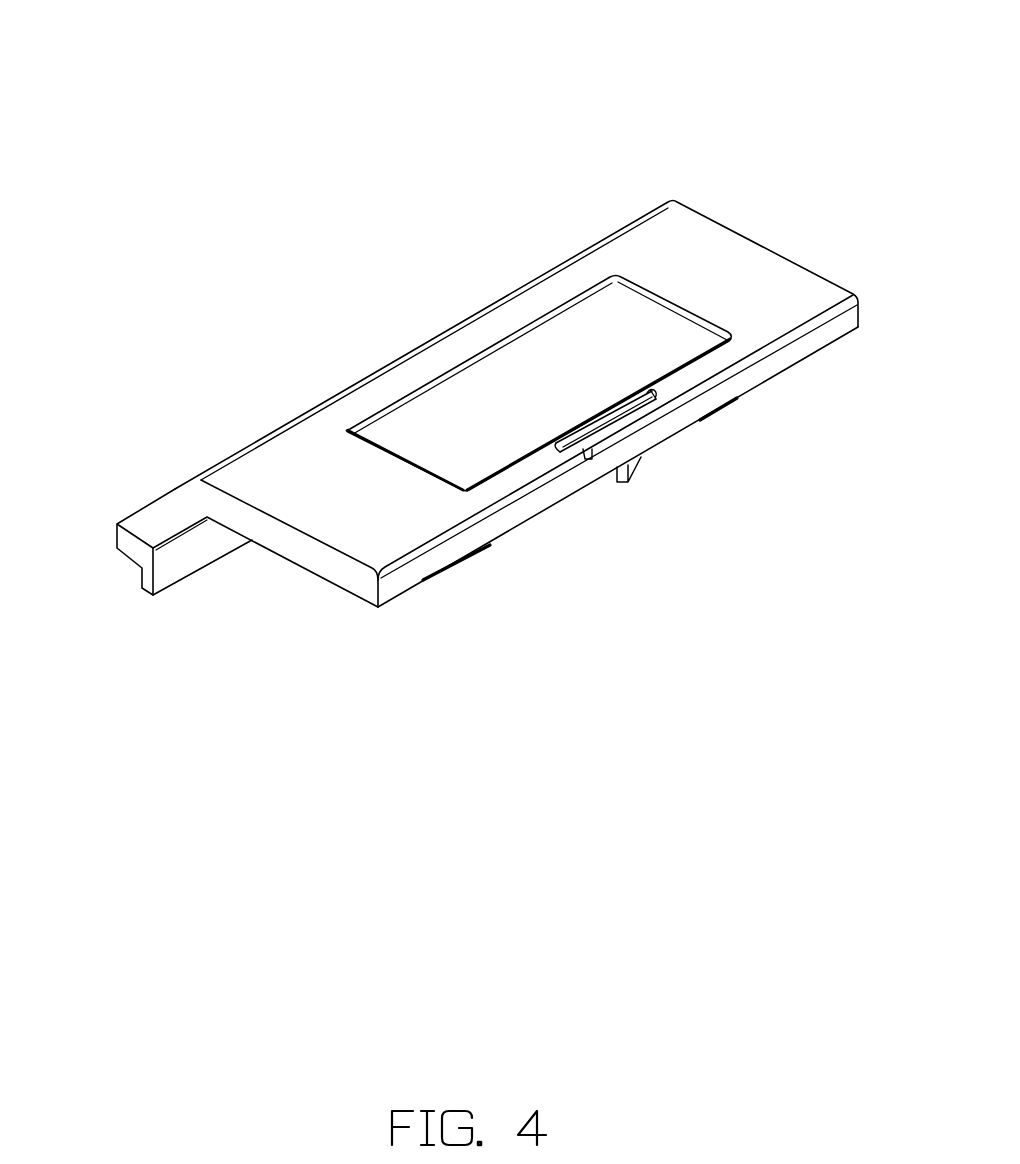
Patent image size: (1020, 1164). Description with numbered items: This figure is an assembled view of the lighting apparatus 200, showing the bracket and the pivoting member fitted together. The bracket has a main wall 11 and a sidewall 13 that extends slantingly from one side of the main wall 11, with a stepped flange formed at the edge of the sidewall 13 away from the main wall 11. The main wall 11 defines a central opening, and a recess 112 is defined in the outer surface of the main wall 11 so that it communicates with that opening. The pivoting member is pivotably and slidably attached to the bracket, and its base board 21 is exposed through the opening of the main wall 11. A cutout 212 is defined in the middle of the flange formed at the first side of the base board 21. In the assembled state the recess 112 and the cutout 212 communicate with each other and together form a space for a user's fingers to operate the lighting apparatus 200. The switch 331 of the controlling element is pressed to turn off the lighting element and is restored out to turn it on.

The lighting apparatus 200 is at (540, 53).
The main wall 11 is at (315, 562).
The sidewall 13 is at (152, 531).
The base board 21 is at (515, 385).
The recess 112 is at (633, 415).
The cutout 212 is at (608, 413).
The switch 331 is at (632, 479).